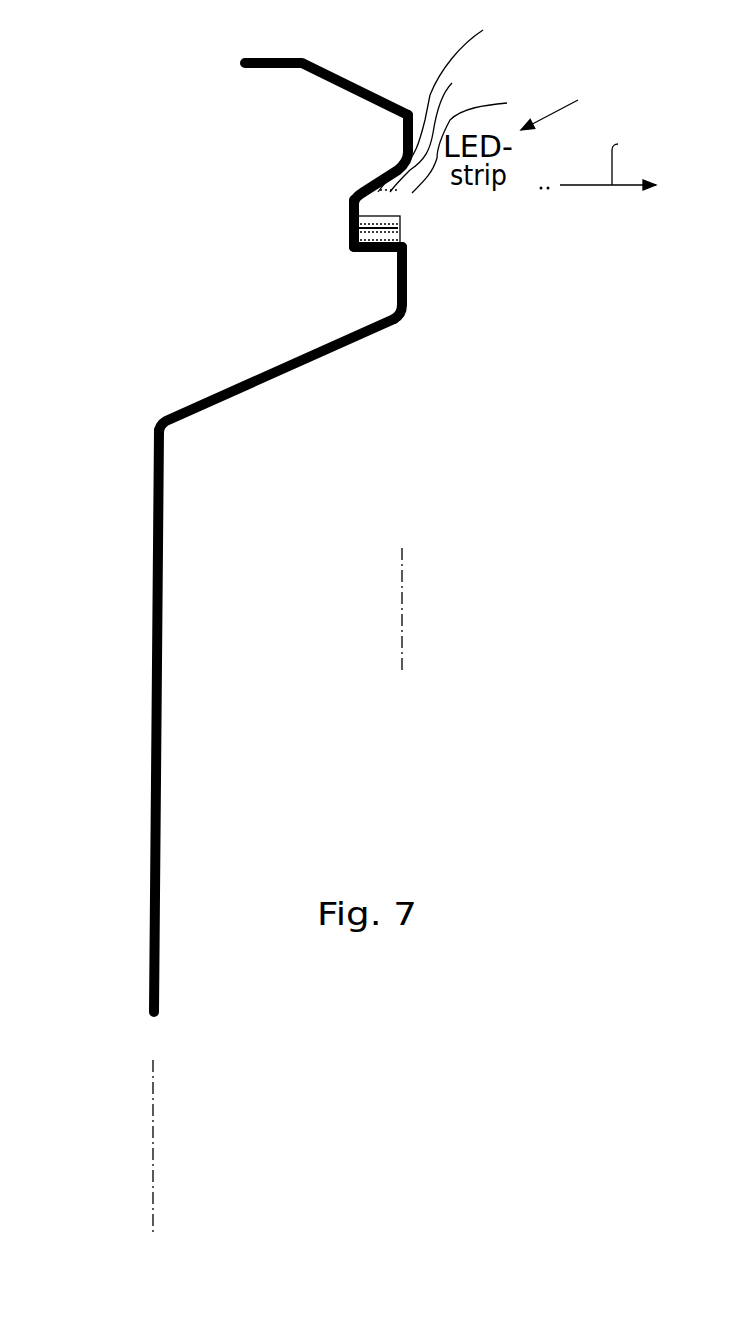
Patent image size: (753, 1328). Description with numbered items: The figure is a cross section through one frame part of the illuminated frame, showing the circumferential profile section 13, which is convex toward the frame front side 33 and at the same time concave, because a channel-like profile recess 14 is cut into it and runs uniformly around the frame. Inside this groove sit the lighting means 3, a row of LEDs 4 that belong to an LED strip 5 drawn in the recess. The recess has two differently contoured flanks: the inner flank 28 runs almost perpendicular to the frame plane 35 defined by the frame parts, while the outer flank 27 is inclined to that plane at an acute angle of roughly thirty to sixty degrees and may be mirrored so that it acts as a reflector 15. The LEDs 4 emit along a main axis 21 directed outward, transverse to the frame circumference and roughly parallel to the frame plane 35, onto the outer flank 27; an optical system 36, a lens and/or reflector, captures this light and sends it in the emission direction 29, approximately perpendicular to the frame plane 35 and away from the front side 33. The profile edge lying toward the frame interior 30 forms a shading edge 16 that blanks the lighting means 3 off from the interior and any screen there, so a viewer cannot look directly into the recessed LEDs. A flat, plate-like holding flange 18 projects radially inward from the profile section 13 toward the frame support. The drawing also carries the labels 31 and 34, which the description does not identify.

The lighting means 3 is at (356, 227).
The LEDs 4 is at (377, 261).
The LED strip 5 is at (413, 224).
The circumferential profile section 13 is at (377, 84).
The profile recess 14 is at (352, 222).
The reflector 15 is at (483, 137).
The shading edge 16 is at (419, 303).
The holding flange 18 is at (161, 840).
The main axis 21 is at (352, 200).
The outer flank 27 is at (442, 124).
The inner flank 28 is at (415, 296).
The emission direction 29 is at (603, 154).
The frame interior 30 is at (265, 731).
The inclined wall 31 is at (410, 340).
The frame front side 33 is at (452, 98).
The axis 34 is at (497, 620).
The frame plane 35 is at (153, 1150).
The optical system 36 is at (572, 103).